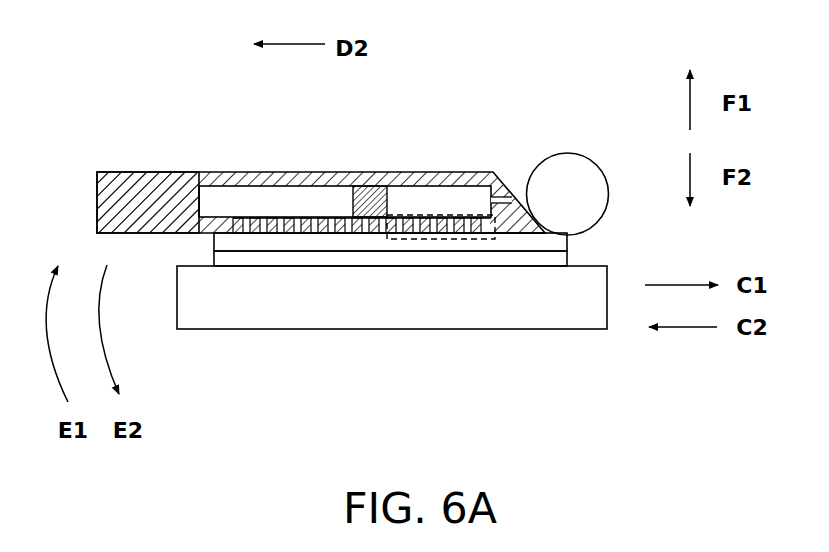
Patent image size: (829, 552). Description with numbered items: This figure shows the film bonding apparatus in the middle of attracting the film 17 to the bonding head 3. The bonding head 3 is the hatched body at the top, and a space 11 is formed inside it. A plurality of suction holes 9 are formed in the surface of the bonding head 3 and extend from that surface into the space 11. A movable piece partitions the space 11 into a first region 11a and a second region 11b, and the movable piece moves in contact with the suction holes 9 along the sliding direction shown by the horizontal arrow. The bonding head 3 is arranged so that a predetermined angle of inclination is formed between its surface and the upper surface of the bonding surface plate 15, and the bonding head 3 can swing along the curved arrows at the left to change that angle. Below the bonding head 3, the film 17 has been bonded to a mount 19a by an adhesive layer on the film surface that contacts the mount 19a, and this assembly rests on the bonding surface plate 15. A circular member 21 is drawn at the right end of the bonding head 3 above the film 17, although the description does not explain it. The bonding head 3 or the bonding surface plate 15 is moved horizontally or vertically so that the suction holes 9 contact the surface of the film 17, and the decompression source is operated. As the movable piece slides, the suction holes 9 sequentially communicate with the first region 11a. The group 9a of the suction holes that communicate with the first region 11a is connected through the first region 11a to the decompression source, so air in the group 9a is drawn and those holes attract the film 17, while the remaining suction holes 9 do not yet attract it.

The bonding head 3 is at (106, 172).
The space 11 is at (256, 172).
The second region 11b is at (197, 172).
The first region 11a is at (403, 193).
The suction holes 9 is at (238, 219).
The group of the suction holes 9a is at (440, 215).
The film 17 is at (530, 243).
The mount 19a is at (403, 258).
The bonding surface plate 15 is at (268, 305).
The roller 21 is at (570, 215).